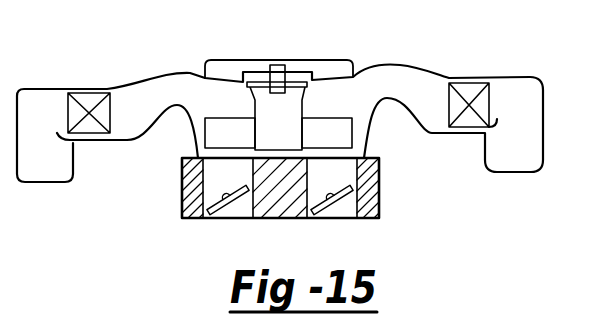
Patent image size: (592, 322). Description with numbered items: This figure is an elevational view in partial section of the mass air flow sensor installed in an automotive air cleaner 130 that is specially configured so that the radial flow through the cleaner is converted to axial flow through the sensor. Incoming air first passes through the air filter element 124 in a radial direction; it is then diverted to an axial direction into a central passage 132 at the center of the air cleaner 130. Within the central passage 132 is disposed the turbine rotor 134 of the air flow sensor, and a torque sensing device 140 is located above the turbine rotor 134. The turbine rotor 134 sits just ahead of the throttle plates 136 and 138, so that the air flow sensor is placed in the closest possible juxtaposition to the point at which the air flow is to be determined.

The air filter element 124 is at (84, 100).
The air cleaner 130 is at (163, 70).
The central passage 132 is at (318, 113).
The turbine rotor 134 is at (192, 72).
The throttle plate 136 is at (229, 213).
The throttle plate 138 is at (336, 213).
The torque sensing device 140 is at (283, 63).